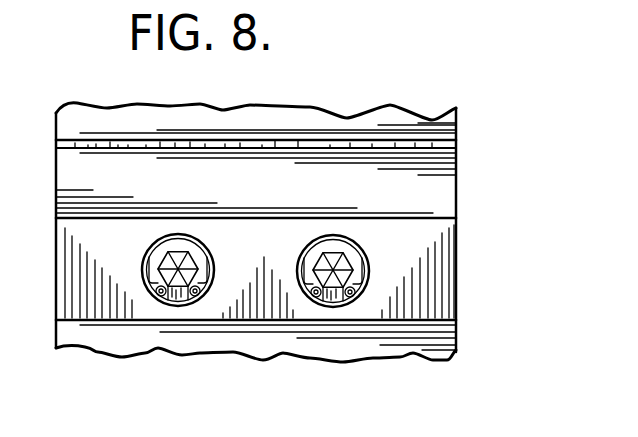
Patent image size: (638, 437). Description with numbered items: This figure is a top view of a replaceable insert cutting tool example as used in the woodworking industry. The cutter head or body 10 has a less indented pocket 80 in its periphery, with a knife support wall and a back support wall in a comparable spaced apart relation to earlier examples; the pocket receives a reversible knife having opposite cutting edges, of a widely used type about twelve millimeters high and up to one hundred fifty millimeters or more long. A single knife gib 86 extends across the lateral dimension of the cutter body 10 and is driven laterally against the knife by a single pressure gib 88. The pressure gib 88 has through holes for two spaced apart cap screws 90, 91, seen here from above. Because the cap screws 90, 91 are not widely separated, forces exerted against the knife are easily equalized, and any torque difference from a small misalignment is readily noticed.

The cutter head 10 is at (373, 352).
The pocket 80 is at (445, 145).
The knife gib 86 is at (440, 198).
The pressure gib 88 is at (442, 305).
The cap screw 90 is at (160, 277).
The cap screw 91 is at (355, 275).